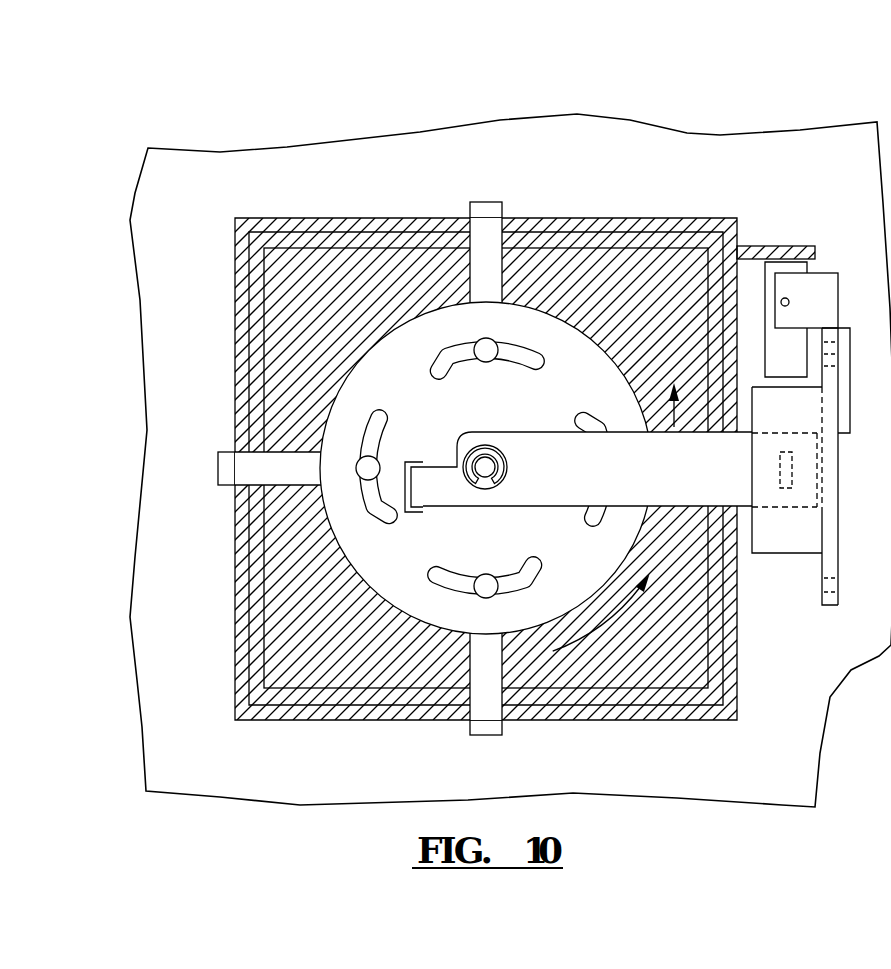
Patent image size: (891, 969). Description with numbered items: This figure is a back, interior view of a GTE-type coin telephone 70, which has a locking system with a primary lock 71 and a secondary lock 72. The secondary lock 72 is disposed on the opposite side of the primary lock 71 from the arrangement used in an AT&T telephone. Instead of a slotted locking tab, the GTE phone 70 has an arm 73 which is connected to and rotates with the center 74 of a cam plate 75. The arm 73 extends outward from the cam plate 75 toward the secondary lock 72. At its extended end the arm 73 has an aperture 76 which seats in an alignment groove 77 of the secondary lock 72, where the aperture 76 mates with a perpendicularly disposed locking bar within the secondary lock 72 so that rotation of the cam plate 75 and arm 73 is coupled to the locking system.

The GTE-type coin telephone 70 is at (676, 108).
The primary lock mechanism 71 is at (338, 360).
The secondary lock mechanism 72 is at (783, 590).
The arm 73 is at (528, 452).
The center of cam plate 74 is at (492, 504).
The cam plate 75 is at (390, 580).
The aperture 76 is at (765, 471).
The alignment groove 77 is at (822, 416).